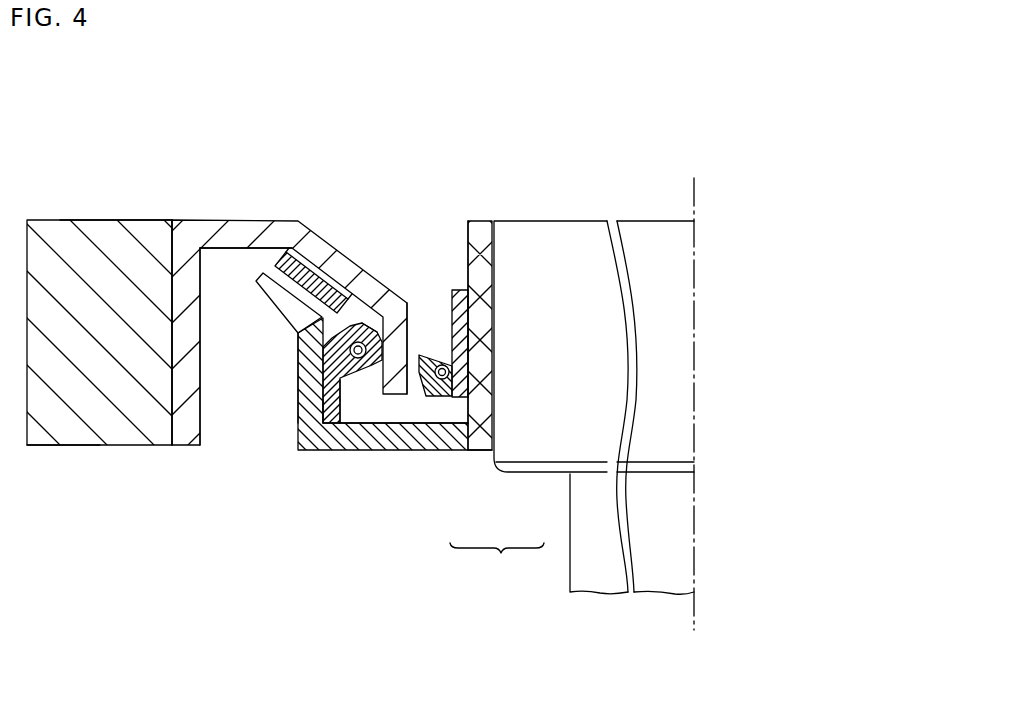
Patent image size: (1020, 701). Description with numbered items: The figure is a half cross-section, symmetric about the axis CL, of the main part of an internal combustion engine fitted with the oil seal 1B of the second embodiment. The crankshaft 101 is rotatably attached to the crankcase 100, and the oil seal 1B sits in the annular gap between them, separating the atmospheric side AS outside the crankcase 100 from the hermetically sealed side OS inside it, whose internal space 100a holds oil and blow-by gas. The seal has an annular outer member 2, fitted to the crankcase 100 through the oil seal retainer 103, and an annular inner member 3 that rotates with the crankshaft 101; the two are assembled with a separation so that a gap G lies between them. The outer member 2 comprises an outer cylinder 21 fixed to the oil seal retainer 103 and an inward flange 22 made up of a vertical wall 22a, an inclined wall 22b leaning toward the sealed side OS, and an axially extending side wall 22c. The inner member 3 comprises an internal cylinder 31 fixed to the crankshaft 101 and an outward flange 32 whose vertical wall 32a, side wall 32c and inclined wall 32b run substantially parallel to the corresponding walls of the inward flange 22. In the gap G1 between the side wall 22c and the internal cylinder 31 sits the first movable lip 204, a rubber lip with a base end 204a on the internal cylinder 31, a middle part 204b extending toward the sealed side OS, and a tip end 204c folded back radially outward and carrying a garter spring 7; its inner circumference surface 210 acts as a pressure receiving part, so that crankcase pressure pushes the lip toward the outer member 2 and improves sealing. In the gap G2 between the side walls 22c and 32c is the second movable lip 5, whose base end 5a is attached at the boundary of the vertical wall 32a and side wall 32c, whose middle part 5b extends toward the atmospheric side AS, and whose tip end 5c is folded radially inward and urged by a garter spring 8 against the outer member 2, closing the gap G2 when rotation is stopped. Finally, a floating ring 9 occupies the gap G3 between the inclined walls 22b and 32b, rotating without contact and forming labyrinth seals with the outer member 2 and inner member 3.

The crankcase 100 is at (66, 219).
The oil seal retainer 103 is at (131, 220).
The internal space 100a is at (160, 589).
The outer member 2 is at (246, 157).
The outer cylinder 21 is at (213, 247).
The inward flange 22 is at (238, 232).
The vertical wall 22a is at (240, 232).
The inclined wall 22b is at (353, 316).
The side wall 22c is at (420, 322).
The inner member 3 is at (497, 560).
The internal cylinder 31 is at (466, 400).
The outward flange 32 is at (462, 446).
The vertical wall 32a is at (315, 452).
The inclined wall 32b is at (273, 317).
The side wall 32c is at (298, 395).
The second movable lip 5 is at (362, 322).
The base end 5a is at (332, 425).
The middle part 5b is at (333, 370).
The tip end 5c is at (377, 325).
The garter spring 7 is at (452, 396).
The garter spring 8 is at (372, 432).
The floating ring 9 is at (351, 343).
The crankshaft 101 is at (547, 221).
The first movable lip 204 is at (453, 274).
The base end 204a is at (468, 300).
The middle part 204b is at (468, 333).
The tip end 204c is at (432, 400).
The inner circumference surface 210 is at (468, 370).
The oil seal 1B is at (300, 138).
The atmospheric side AS is at (405, 89).
The hermetically sealed side OS is at (352, 644).
The gap G is at (385, 420).
The gap G1 is at (425, 318).
The gap G2 is at (300, 427).
The gap G3 is at (348, 298).
The axis CL is at (696, 402).